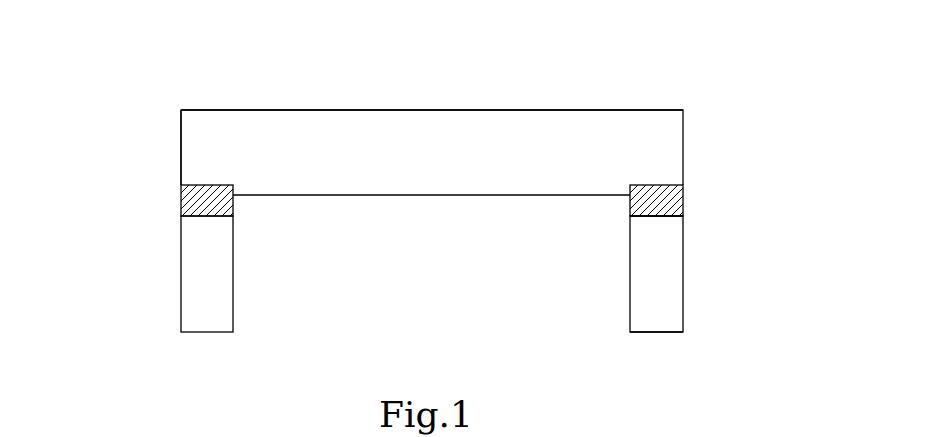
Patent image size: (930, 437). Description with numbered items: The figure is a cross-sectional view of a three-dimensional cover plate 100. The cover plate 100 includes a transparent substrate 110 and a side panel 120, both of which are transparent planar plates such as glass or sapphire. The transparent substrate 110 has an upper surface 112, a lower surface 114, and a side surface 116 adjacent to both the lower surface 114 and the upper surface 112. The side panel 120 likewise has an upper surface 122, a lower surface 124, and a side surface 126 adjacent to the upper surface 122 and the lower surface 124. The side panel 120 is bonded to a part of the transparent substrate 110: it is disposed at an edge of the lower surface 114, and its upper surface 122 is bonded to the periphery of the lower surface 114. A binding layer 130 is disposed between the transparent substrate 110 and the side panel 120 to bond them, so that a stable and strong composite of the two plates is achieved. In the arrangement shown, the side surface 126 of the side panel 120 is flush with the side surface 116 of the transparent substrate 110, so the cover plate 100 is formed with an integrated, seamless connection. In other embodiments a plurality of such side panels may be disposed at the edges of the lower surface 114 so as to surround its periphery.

The three-dimensional cover plate 100 is at (88, 48).
The transparent substrate 110 is at (672, 152).
The upper surface 112 is at (490, 110).
The lower surface 114 is at (440, 196).
The side surface 116 is at (181, 150).
The side panel 120 is at (675, 283).
The upper surface 122 is at (670, 218).
The lower surface 124 is at (655, 333).
The side surface 126 is at (234, 255).
The binding layer 130 is at (683, 198).